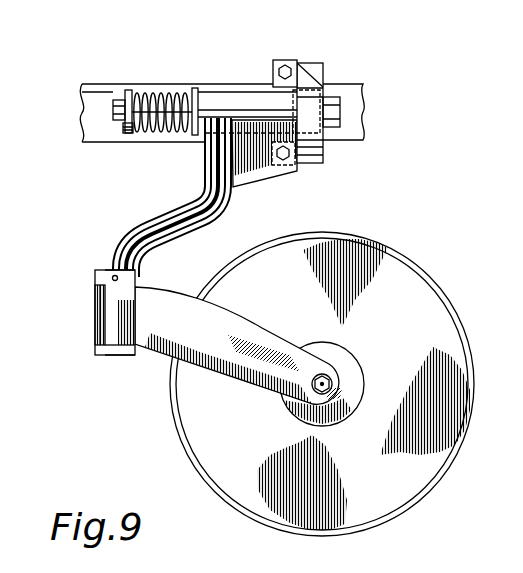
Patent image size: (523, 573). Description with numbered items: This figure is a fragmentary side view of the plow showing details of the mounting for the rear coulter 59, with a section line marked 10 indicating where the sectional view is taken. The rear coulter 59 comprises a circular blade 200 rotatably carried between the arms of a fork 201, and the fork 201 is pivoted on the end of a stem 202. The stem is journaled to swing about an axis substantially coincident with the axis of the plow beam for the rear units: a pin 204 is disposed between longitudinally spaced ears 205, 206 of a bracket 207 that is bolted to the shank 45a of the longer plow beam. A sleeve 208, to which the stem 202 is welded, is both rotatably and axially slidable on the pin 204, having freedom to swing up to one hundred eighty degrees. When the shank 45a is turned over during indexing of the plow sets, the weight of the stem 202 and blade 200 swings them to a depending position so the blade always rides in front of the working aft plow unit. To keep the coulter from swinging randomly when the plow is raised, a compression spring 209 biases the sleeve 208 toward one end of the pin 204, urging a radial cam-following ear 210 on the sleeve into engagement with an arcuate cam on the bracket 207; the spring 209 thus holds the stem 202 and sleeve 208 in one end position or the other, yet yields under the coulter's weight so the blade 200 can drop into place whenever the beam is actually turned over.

The section line 10- 10 is at (247, 32).
The shank 45a is at (97, 104).
The rear coulter 59 is at (401, 252).
The circular blade 200 is at (200, 407).
The fork 201 is at (227, 330).
The stem 202 is at (125, 243).
The pin 204 is at (175, 100).
The ear 205 is at (128, 90).
The ear 206 is at (328, 92).
The bracket 207 is at (148, 92).
The sleeve 208 is at (237, 107).
The compression spring 209 is at (158, 128).
The cam-following ear 210 is at (298, 164).